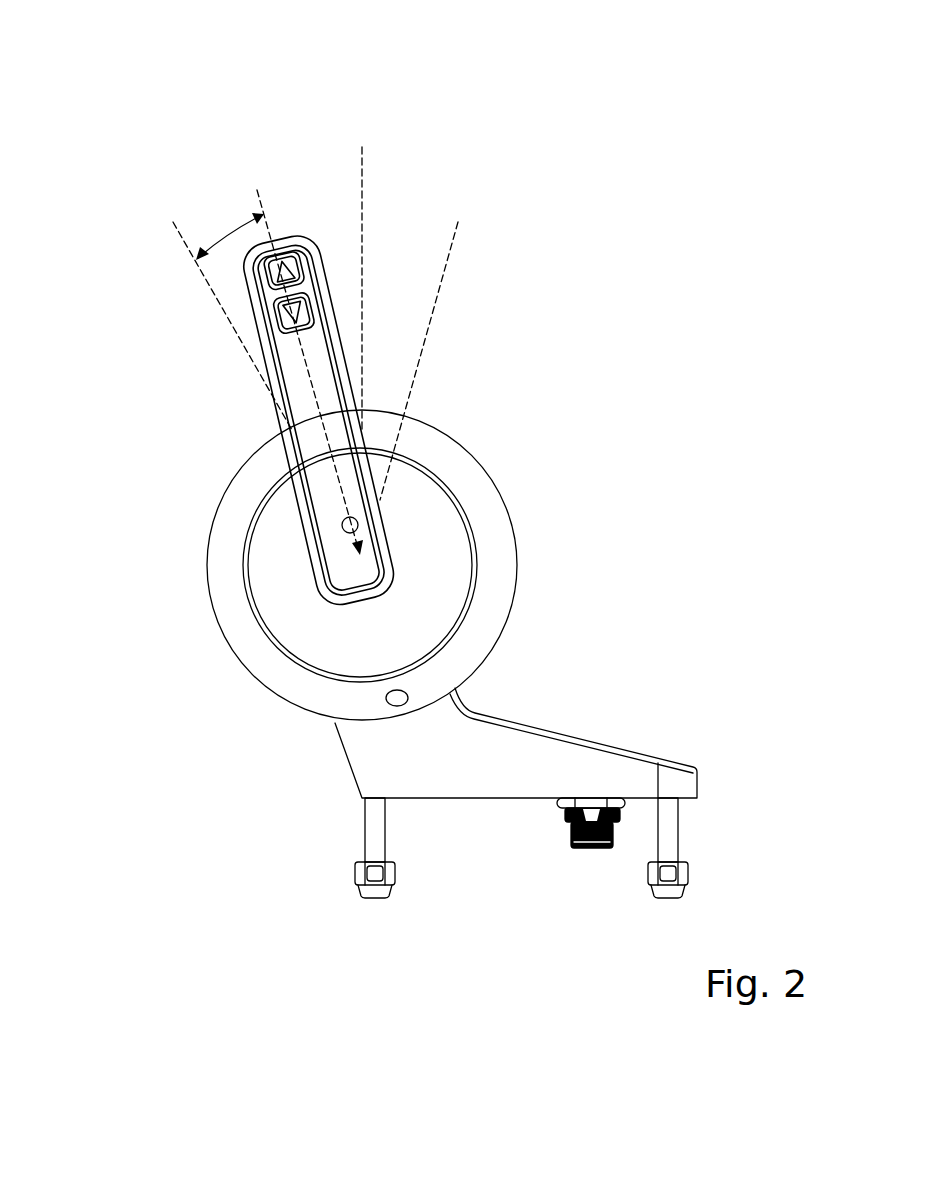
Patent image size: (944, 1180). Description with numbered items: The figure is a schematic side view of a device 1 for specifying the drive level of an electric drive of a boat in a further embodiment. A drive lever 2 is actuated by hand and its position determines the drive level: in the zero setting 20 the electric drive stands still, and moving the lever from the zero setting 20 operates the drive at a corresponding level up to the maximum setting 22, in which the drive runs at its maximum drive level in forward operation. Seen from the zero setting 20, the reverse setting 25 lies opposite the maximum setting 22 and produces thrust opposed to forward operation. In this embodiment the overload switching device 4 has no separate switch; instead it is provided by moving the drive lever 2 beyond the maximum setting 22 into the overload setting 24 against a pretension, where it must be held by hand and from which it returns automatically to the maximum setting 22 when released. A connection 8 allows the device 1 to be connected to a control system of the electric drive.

The device 1 is at (700, 98).
The drive lever 2 is at (293, 405).
The overload switching device 4 is at (185, 162).
The connection 8 is at (590, 850).
The zero setting 20 is at (363, 155).
The maximum setting 22 is at (262, 190).
The overload setting 24 is at (185, 242).
The reverse setting 25 is at (437, 298).